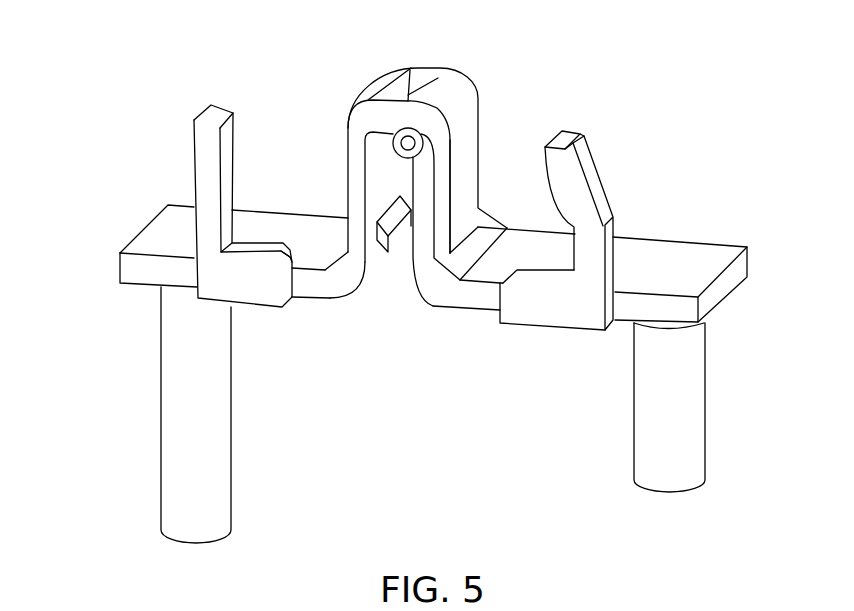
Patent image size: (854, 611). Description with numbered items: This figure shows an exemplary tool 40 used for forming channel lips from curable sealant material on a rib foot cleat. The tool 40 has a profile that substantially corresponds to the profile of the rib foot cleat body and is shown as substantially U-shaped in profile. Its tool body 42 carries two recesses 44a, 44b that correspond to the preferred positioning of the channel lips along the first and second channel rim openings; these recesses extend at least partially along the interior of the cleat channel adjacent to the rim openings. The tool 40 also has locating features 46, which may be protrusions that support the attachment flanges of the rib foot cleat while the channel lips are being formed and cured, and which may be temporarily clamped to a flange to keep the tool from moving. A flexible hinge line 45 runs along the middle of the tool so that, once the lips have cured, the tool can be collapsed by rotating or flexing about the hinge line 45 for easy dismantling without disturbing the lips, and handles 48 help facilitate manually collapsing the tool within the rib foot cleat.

The tool 40 is at (94, 130).
The tool body 42 is at (426, 157).
The recess 44a is at (380, 127).
The recess 44b is at (463, 80).
The hinge line 45 is at (397, 77).
The locating features 46 is at (550, 312).
The handles 48 is at (192, 527).